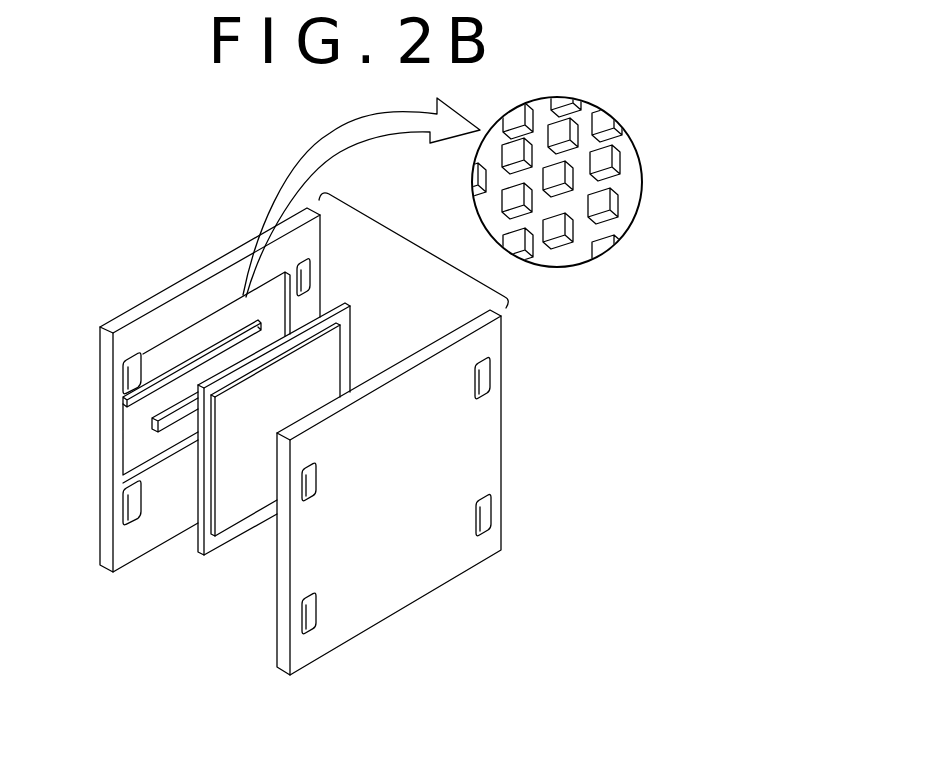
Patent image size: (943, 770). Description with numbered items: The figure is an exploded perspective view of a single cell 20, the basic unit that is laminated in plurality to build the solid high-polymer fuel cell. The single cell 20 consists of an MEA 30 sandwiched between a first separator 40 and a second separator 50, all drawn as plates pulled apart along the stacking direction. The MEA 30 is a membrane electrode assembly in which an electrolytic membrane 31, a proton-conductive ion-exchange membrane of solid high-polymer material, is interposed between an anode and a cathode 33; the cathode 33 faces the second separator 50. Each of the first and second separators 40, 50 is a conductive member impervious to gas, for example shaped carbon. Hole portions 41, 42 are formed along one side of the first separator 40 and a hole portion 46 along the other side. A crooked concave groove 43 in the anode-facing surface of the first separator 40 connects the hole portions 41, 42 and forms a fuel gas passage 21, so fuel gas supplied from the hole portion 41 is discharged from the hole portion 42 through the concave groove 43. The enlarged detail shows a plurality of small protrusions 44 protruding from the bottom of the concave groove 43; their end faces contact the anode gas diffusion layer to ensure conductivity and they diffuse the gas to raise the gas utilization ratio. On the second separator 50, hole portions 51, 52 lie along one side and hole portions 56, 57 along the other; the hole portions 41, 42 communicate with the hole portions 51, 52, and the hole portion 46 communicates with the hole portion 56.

The single cell 20 is at (413, 250).
The fuel gas passage 21 is at (217, 322).
The MEA 30 is at (240, 476).
The electrolytic membrane 31 is at (221, 547).
The cathode 33 is at (243, 498).
The first separator 40 is at (307, 237).
The hole portion 41 is at (123, 383).
The hole portion 42 is at (125, 512).
The concave groove 43 is at (217, 322).
The small protrusions 44 is at (562, 188).
The hole portion 46 is at (303, 275).
The second separator 50 is at (437, 388).
The hole portion 51 is at (318, 482).
The hole portion 52 is at (313, 618).
The hole portion 56 is at (483, 378).
The hole portion 57 is at (485, 515).